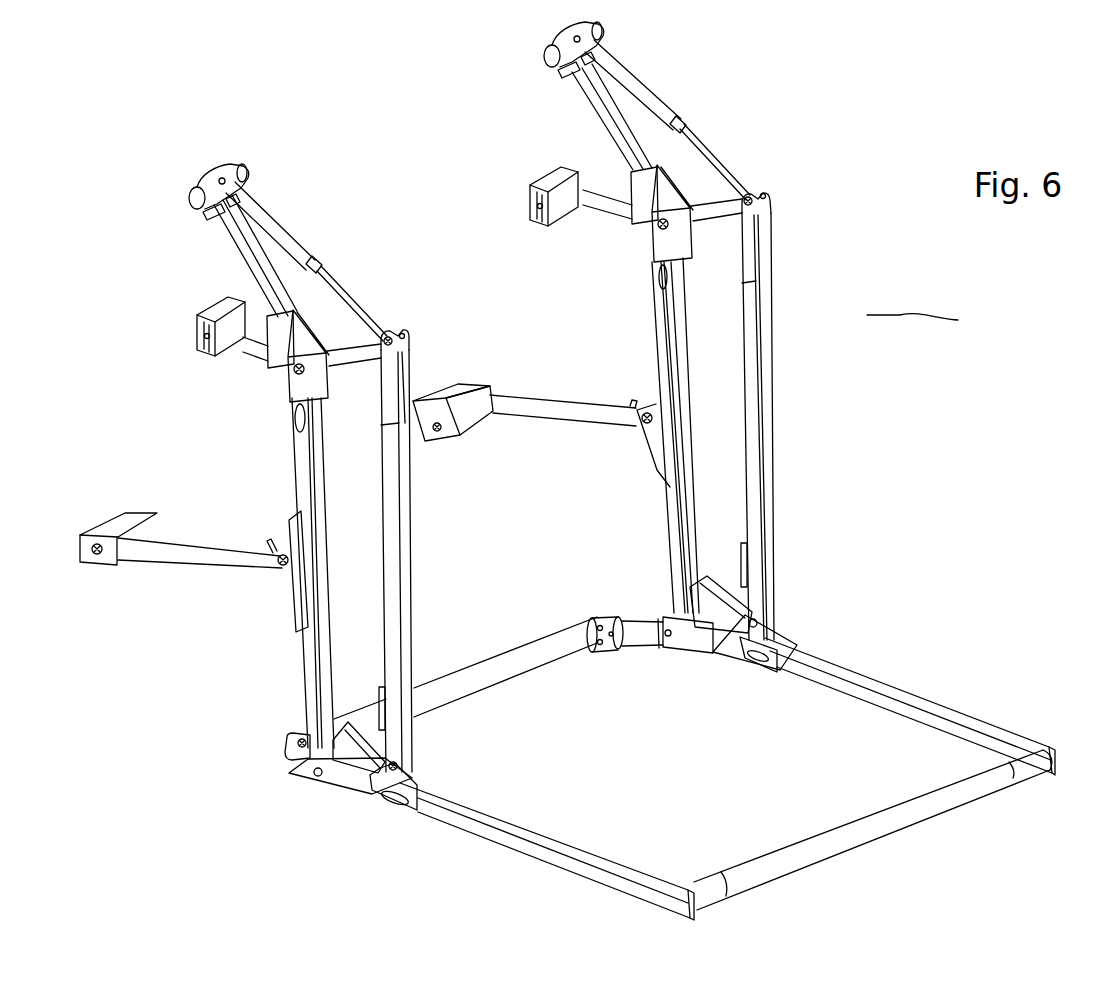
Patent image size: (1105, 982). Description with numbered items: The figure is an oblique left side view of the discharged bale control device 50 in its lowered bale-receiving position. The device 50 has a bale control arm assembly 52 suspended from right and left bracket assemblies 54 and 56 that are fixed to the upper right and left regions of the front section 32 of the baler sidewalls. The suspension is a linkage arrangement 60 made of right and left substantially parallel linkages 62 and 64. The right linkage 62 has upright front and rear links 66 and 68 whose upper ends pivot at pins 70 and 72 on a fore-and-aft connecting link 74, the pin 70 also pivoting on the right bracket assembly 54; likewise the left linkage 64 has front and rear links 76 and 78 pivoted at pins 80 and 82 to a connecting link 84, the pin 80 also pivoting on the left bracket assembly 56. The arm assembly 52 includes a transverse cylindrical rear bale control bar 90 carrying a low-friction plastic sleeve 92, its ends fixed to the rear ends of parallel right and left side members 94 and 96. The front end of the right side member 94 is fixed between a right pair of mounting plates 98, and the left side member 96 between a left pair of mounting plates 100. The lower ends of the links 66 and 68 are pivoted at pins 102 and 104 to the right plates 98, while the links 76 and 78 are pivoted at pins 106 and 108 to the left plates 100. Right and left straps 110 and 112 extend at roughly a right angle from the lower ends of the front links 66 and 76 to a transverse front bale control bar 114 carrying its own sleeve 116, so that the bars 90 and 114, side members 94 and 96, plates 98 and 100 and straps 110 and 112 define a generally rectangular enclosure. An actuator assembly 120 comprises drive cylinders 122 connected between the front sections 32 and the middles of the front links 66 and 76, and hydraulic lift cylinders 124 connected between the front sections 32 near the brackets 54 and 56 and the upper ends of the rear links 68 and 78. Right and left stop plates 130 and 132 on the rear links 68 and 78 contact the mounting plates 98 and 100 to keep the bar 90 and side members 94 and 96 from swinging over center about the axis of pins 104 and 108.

The front section 32 is at (190, 183).
The discharged bale control device 50 is at (867, 315).
The bale control arm assembly 52 is at (714, 754).
The right bracket assembly 54 is at (592, 235).
The left bracket assembly 56 is at (230, 367).
The linkage arrangement 60 is at (444, 560).
The right substantially parallel linkage 62 is at (788, 455).
The left substantially parallel linkage 64 is at (428, 541).
The front link 66 is at (655, 340).
The rear link 68 is at (770, 363).
The pin 70 is at (662, 229).
The pin 72 is at (745, 200).
The connecting link 74 is at (710, 222).
The front link 76 is at (294, 480).
The rear link 78 is at (407, 497).
The pin 80 is at (298, 372).
The pin 82 is at (383, 343).
The connecting link 84 is at (348, 362).
The rear bale control member or bar 90 is at (1027, 770).
The low-friction plastic coating or sleeve 92 is at (827, 832).
The right side member 94 is at (884, 690).
The left side member 96 is at (567, 847).
The right pair of parallel mounting plates 98 is at (720, 603).
The left pair of parallel mounting plates 100 is at (364, 740).
The pin 102 is at (680, 648).
The pin 104 is at (755, 615).
The pin 106 is at (314, 780).
The pin 108 is at (373, 782).
The right strap 110 is at (634, 626).
The left strap 112 is at (285, 750).
The front bale control member or bar 114 is at (592, 620).
The low-friction plastic coating or sleeve 116 is at (540, 643).
The actuator assembly 120 is at (302, 203).
The drive cylinder 122 is at (196, 556).
The hydraulic lift cylinder 124 is at (300, 247).
The right stop plate 130 is at (748, 566).
The left stop plate 132 is at (388, 713).